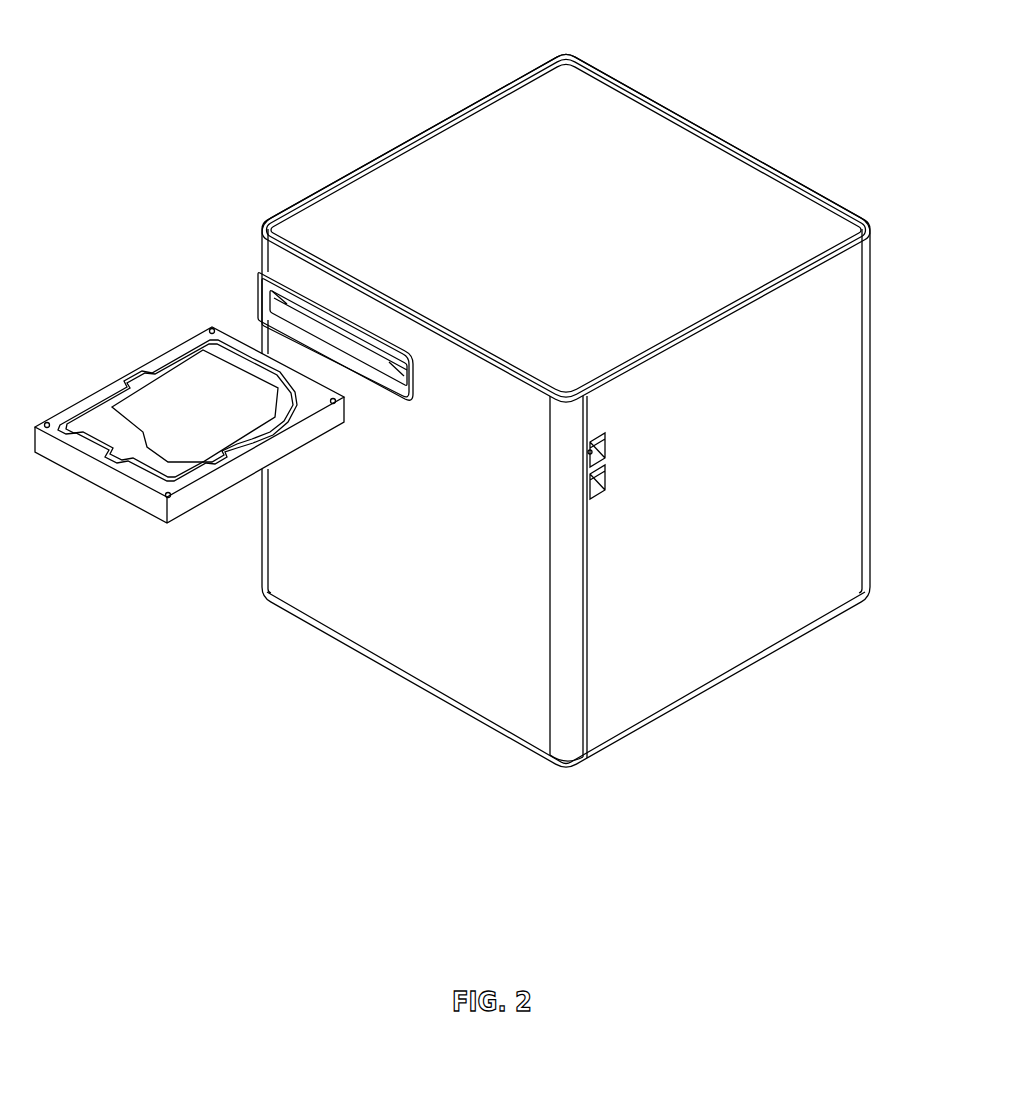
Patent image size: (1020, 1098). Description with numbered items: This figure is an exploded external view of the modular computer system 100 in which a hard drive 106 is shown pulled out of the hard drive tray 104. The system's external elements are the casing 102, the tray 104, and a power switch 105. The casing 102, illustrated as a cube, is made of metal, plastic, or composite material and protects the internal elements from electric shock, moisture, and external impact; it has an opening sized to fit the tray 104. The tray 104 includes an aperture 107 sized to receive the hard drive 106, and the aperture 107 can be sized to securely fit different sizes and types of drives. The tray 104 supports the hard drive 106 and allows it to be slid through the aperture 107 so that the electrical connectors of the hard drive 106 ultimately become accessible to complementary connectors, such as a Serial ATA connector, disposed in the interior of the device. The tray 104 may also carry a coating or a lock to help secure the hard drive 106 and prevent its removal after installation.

The modular computer system 100 is at (523, 397).
The casing 102 is at (405, 168).
The hard drive tray 104 is at (262, 284).
The power switch 105 is at (640, 455).
The hard drive 106 is at (133, 379).
The aperture 107 is at (402, 380).